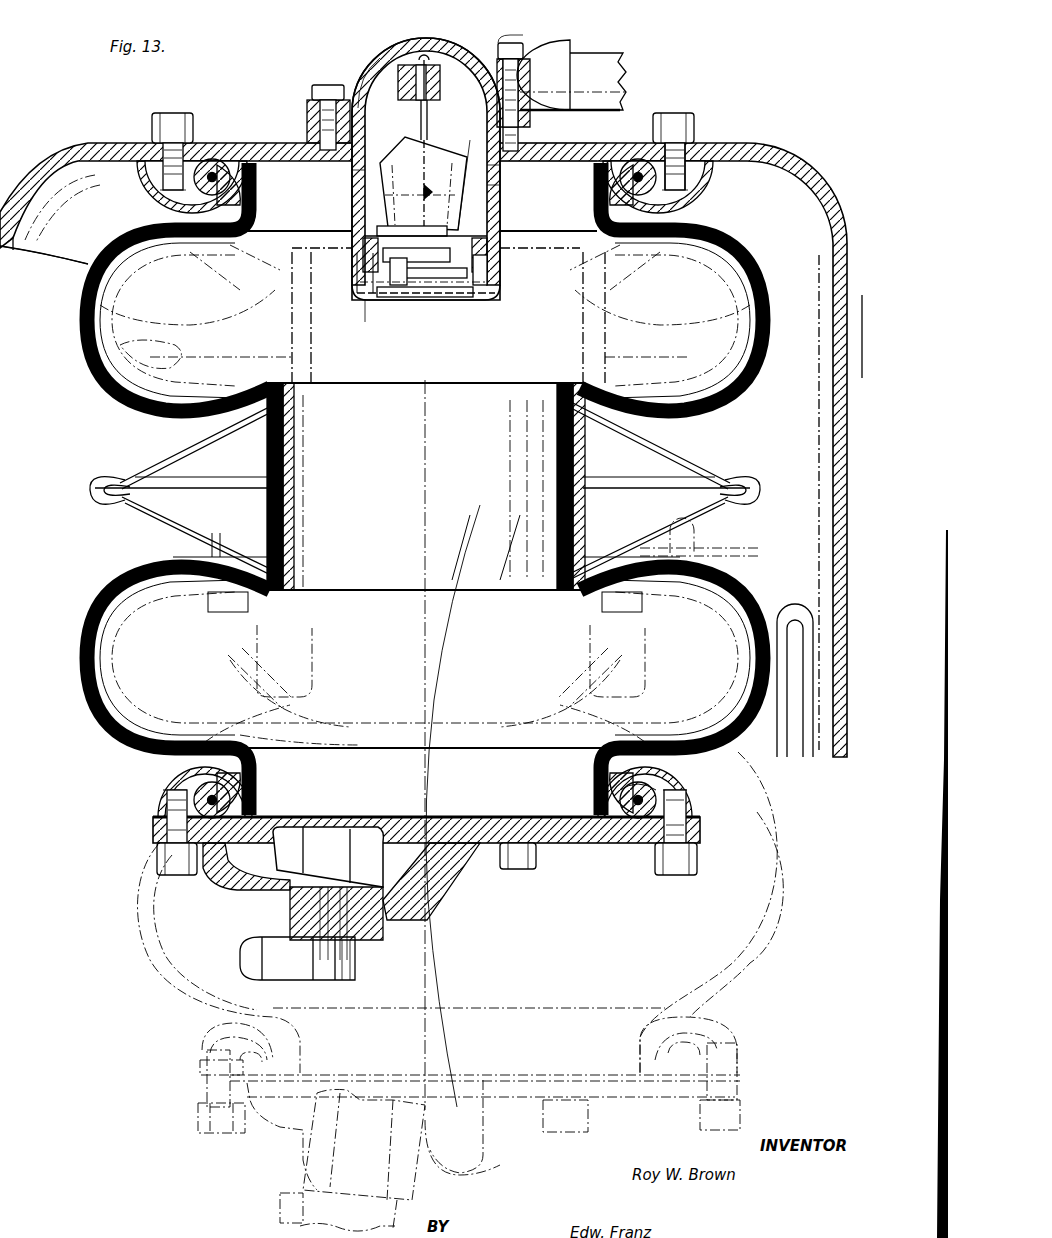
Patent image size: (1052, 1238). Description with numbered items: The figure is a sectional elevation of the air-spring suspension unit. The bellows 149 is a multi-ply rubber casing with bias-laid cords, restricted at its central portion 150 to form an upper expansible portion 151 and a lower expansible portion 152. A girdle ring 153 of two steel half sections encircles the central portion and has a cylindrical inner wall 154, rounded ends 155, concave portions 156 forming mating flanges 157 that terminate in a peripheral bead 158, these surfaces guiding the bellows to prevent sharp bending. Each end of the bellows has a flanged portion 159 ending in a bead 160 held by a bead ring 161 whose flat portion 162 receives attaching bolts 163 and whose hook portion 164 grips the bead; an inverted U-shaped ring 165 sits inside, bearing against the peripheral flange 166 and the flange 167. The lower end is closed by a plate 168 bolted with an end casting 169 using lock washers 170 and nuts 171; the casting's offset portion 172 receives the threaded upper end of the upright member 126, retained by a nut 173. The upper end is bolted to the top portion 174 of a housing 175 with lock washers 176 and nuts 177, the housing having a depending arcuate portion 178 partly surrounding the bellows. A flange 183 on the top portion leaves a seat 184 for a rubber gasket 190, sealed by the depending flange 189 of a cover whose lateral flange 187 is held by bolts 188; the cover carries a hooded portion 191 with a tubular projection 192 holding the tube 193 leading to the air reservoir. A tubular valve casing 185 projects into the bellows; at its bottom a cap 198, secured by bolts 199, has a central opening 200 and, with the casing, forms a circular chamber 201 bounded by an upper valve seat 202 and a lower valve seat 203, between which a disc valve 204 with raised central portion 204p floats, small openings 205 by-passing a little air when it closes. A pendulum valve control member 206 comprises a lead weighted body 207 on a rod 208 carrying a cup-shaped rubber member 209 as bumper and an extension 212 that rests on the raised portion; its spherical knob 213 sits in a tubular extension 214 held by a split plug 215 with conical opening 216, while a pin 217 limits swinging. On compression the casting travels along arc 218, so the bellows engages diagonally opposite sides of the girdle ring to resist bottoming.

The upright member 126 is at (357, 965).
The bellows 149 is at (76, 712).
The central portion 150 is at (296, 472).
The upper expansible portion 151 is at (80, 280).
The lower expansible portion 152 is at (78, 660).
The girdle ring 153 is at (203, 526).
The cylindrical inner wall 154 is at (630, 458).
The rounded ends 155 is at (262, 435).
The concave portions 156 is at (220, 452).
The mating flanges 157 is at (138, 500).
The peripheral bead 158 is at (95, 500).
The flanged portions 159 is at (212, 160).
The peripheral beads 160 is at (630, 168).
The bead rings 161 is at (705, 165).
The flat portions 162 is at (205, 160).
The attaching bolts 163 is at (158, 848).
The hook portion 164 is at (175, 780).
The inverted U-shaped rings 165 is at (137, 160).
The peripheral flanges 166 is at (150, 128).
The flanges 167 is at (636, 820).
The plate 168 is at (412, 815).
The end casting 169 is at (530, 850).
The lock washers 170 is at (690, 835).
The nuts 171 is at (665, 866).
The offset portion 172 is at (367, 925).
The nut 173 is at (420, 880).
The top portion 174 is at (245, 160).
The housing 175 is at (830, 165).
The lock washers 176 is at (688, 130).
The nuts 177 is at (690, 115).
The depending arcuate portion 178 is at (830, 757).
The flange 183 is at (595, 150).
The seat 184 is at (343, 78).
The valve casing 185 is at (462, 200).
The lateral flange 187 is at (305, 115).
The bolts 188 is at (318, 92).
The depending flange 189 is at (585, 38).
The rubber gasket 190 is at (352, 168).
The hooded portion 191 is at (450, 48).
The tubular projection 192 is at (540, 22).
The tube 193 is at (630, 62).
The cap 198 is at (480, 280).
The bolts 199 is at (358, 258).
The central opening 200 is at (418, 298).
The circular chamber 201 is at (356, 285).
The upper valve seat 202 is at (488, 258).
The lower valve seat 203 is at (488, 272).
The disc valve 204 is at (365, 300).
The raised central portion 204p is at (425, 300).
The small openings 205 is at (440, 298).
The valve control member 206 is at (492, 168).
The weighted body 207 is at (490, 186).
The rod 208 is at (352, 228).
The cup-shaped rubber member 209 is at (350, 245).
The extension 212 is at (468, 190).
The spherical knob 213 is at (388, 55).
The tubular extension 214 is at (404, 88).
The split plug 215 is at (432, 108).
The conical opening 216 is at (432, 128).
The pin 217 is at (366, 236).
The arc 218 is at (436, 664).